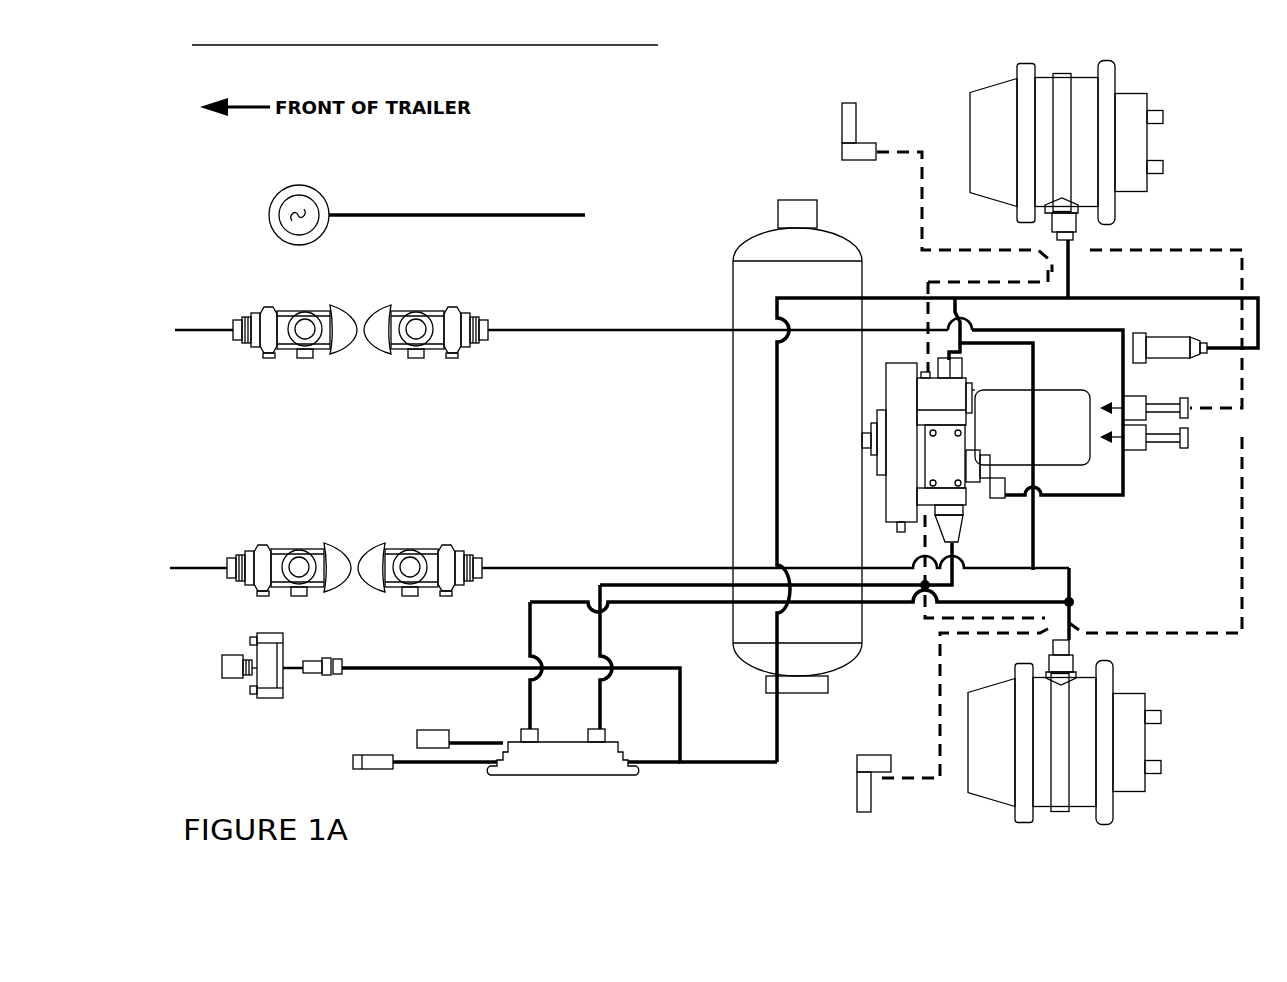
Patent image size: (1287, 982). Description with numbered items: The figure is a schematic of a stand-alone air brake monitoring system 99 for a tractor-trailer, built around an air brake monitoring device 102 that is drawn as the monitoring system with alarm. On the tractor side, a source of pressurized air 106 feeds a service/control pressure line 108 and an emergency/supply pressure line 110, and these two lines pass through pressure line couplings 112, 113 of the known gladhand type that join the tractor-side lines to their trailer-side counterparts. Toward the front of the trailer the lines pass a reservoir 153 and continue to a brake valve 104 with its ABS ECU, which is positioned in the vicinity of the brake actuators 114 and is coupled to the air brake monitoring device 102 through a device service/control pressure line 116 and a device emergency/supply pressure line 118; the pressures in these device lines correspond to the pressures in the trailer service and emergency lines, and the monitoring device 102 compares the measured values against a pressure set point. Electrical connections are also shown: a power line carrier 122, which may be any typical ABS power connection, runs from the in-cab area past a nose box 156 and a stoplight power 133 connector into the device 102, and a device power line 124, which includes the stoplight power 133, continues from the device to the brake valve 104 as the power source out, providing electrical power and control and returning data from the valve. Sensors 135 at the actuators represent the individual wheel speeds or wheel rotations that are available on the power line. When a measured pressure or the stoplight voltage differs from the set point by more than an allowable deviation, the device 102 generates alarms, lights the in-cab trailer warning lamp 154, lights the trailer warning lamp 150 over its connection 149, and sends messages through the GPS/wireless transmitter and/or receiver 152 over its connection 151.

The stand-alone air brake monitoring system 99 is at (708, 130).
The air brake monitoring device 102 is at (551, 752).
The brake valve 104 is at (897, 458).
The source of pressurized air 106 is at (405, 481).
The service/control pressure line 108 is at (222, 327).
The emergency/supply pressure line 110 is at (215, 566).
The pressure line coupling 112 is at (357, 330).
The pressure line coupling 113 is at (354, 567).
The brake actuator 114 is at (1060, 128).
The device service/control pressure line 116 is at (711, 604).
The device emergency/supply pressure line 118 is at (685, 592).
The power line carrier 122 is at (343, 213).
The device power line 124 is at (1170, 344).
The stoplight power 133 is at (311, 673).
The wheel speeds or wheel rotations 135 is at (844, 128).
The warning lamp line 149 is at (438, 768).
The warning lamp 150 is at (366, 769).
The GPS system line 151 is at (481, 741).
The GPS/wireless transmitter and/or receiver 152 is at (447, 734).
The reservoir 153 is at (745, 300).
The in-cab trailer warning lamp 154 is at (270, 225).
The nose box 156 is at (222, 665).